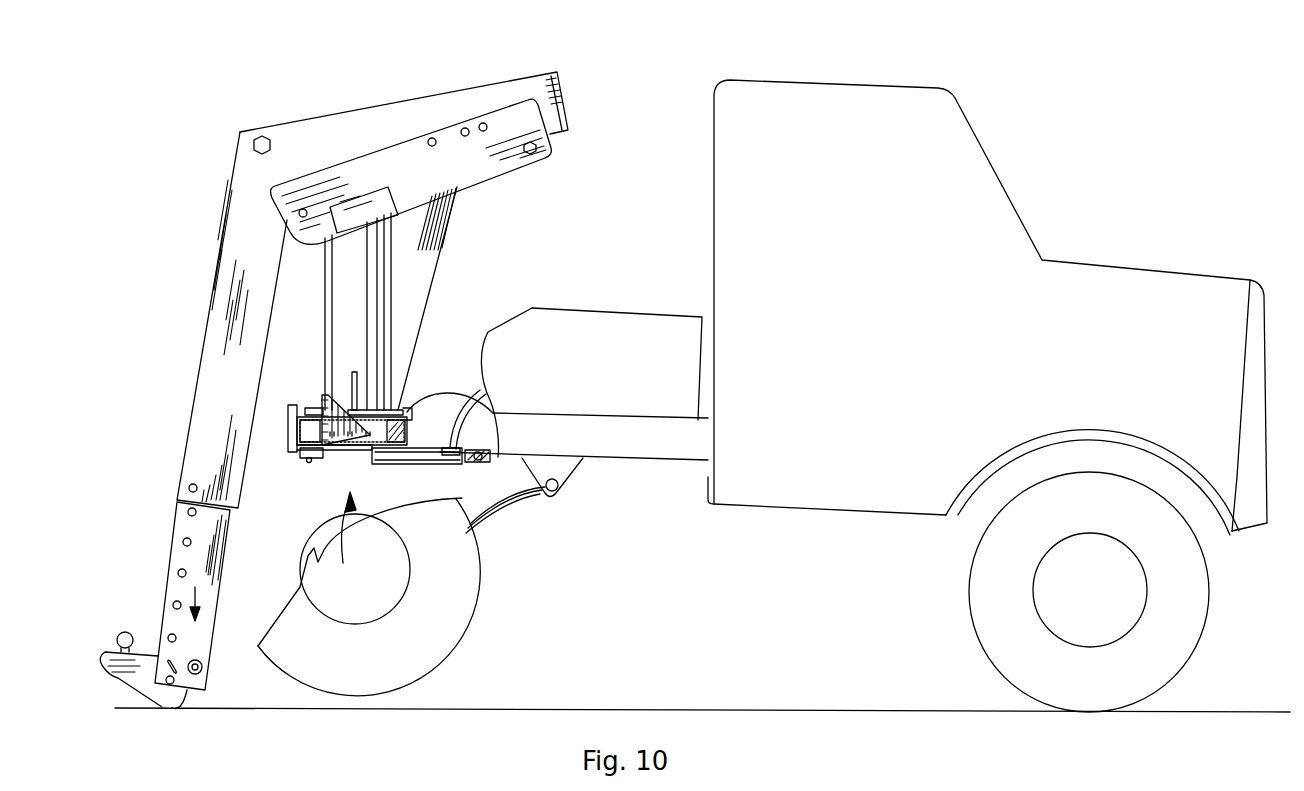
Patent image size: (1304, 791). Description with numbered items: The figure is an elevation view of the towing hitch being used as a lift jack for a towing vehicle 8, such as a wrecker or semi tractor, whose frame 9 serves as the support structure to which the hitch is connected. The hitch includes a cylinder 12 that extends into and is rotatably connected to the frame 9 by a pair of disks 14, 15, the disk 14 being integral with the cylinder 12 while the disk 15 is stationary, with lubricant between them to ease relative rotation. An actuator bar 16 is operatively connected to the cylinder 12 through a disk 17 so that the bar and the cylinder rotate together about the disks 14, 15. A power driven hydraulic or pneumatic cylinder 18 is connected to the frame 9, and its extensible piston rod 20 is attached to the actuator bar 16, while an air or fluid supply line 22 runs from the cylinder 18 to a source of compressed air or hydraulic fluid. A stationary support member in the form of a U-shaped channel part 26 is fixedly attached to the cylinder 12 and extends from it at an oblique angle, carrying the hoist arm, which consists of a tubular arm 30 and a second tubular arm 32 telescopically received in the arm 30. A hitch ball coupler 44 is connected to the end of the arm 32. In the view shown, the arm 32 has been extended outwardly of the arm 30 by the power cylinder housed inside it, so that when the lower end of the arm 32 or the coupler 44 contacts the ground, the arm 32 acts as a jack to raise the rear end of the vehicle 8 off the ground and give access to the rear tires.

The towing vehicle 8 is at (737, 138).
The frame 9 is at (297, 433).
The cylinder 12 is at (377, 285).
The disk 14 is at (397, 407).
The disk 15 is at (407, 412).
The actuator bar 16 is at (308, 452).
The disk 17 is at (353, 450).
The power driven cylinder 18 is at (427, 453).
The extensible piston rod 20 is at (342, 450).
The air or fluid supply line 22 is at (493, 413).
The U-shaped channel part 26 is at (487, 150).
The tubular arm 30 is at (442, 108).
The tubular arm 32 is at (195, 523).
The hitch ball coupler 44 is at (107, 655).